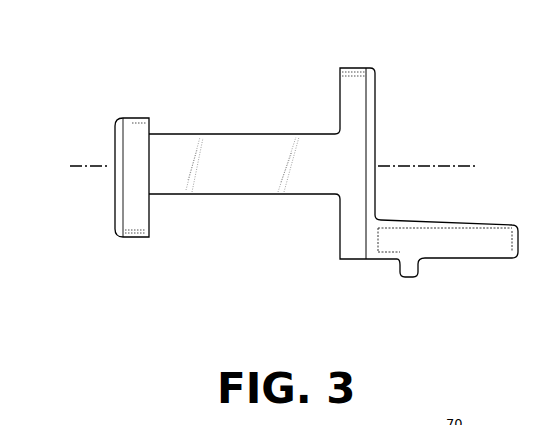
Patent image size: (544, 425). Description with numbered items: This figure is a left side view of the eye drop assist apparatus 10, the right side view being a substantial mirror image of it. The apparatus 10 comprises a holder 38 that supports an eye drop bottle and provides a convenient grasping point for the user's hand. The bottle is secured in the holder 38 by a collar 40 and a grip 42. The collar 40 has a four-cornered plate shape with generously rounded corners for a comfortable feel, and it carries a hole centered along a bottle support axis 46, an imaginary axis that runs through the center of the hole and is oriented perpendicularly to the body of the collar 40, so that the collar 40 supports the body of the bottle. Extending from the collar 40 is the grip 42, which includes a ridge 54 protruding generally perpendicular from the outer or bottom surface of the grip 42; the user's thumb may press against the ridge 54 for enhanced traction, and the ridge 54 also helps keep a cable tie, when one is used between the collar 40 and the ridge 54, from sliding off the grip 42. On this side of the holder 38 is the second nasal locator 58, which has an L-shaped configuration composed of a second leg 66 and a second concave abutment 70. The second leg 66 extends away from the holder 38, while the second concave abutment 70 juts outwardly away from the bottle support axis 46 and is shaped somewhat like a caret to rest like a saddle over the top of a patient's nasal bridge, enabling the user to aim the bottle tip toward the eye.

The apparatus 10 is at (391, 59).
The second concave abutment 70 is at (112, 212).
The second nasal locator 58 is at (207, 196).
The second leg 66 is at (260, 194).
The collar 40 is at (355, 68).
The holder 38 is at (363, 263).
The grip 42 is at (488, 259).
The ridge 54 is at (409, 278).
The bottle support axis 46 is at (405, 165).